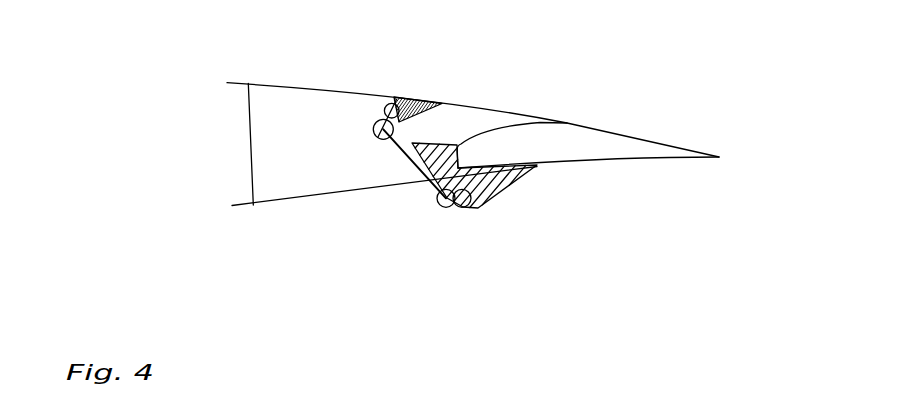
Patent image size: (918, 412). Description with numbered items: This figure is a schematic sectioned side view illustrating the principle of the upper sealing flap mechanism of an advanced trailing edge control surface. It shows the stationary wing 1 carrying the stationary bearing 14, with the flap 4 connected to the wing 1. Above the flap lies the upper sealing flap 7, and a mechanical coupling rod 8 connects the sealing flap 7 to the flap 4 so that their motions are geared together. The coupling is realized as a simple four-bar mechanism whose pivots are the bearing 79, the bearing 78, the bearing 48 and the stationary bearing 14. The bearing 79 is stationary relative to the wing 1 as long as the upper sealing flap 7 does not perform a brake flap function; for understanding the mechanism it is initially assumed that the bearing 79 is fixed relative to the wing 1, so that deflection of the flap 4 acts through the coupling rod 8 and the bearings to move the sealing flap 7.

The stationary wing 1 is at (248, 138).
The upper sealing flap 7 is at (457, 101).
The flap 4 is at (563, 164).
The mechanical coupling rod 8 is at (410, 163).
The stationary bearing 14 is at (465, 208).
The bearing 48 is at (443, 208).
The bearing 78 is at (376, 132).
The bearing 79 is at (386, 102).